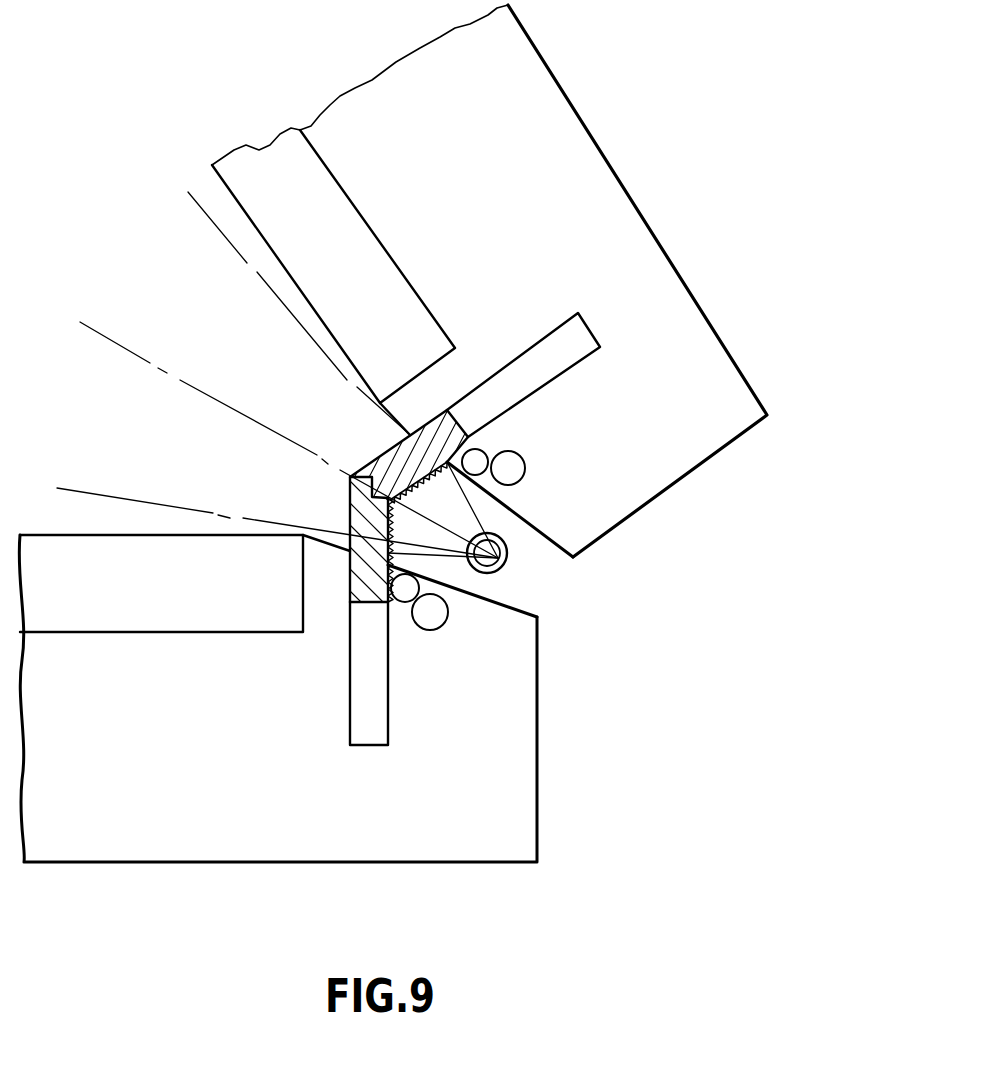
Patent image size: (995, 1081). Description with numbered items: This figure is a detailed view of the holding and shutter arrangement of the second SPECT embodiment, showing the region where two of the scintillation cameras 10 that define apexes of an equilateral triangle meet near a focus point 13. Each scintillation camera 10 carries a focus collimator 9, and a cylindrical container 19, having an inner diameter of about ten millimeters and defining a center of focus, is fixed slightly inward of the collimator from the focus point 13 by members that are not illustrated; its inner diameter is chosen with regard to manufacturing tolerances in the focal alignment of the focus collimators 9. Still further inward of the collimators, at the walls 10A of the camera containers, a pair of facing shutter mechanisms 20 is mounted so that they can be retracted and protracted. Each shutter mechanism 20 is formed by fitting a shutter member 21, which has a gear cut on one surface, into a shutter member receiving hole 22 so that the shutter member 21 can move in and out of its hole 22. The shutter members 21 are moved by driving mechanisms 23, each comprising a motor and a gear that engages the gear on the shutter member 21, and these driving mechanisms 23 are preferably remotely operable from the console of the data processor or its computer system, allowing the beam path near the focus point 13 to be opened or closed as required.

The focus collimator 9 is at (384, 257).
The scintillation camera 10 is at (583, 135).
The wall of container of scintillation camera 10A is at (595, 540).
The focus point 13 is at (506, 562).
The cylindrical container 19 is at (502, 535).
The shutter mechanism 20 is at (649, 416).
The shutter member 21 is at (430, 422).
The shutter member receiving hole 22 is at (552, 335).
The driving mechanism 23 is at (522, 466).